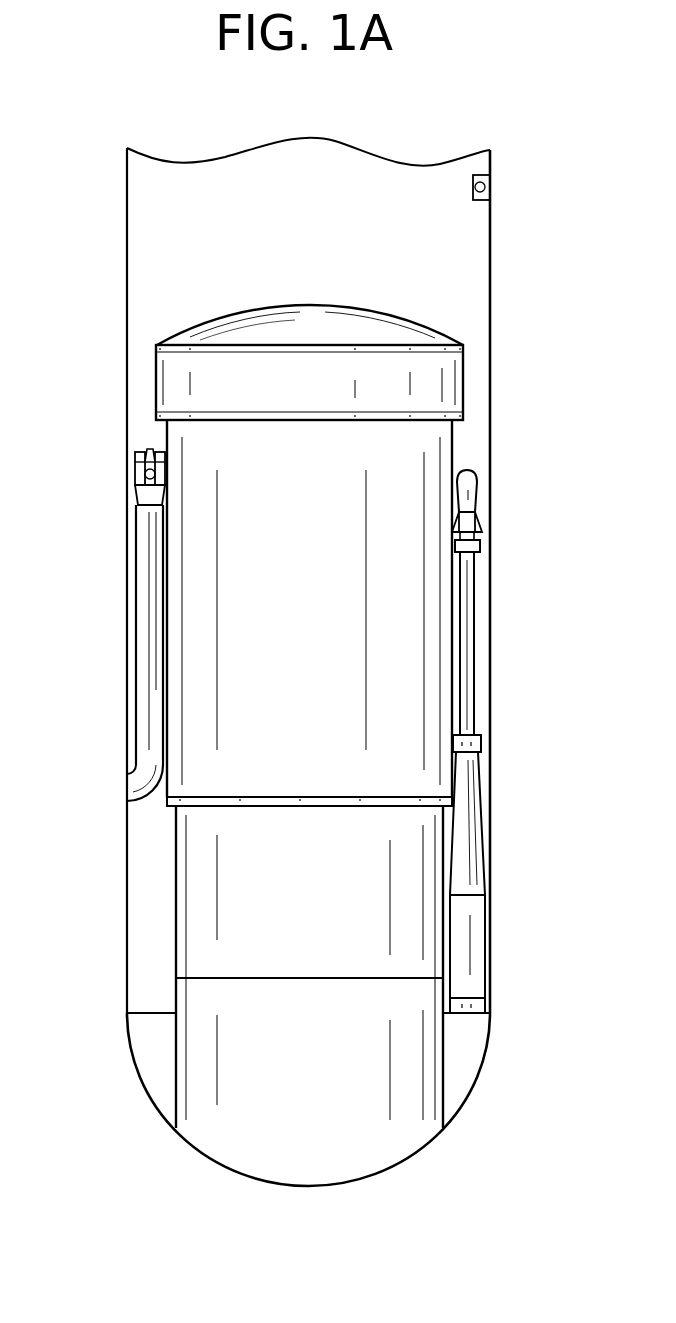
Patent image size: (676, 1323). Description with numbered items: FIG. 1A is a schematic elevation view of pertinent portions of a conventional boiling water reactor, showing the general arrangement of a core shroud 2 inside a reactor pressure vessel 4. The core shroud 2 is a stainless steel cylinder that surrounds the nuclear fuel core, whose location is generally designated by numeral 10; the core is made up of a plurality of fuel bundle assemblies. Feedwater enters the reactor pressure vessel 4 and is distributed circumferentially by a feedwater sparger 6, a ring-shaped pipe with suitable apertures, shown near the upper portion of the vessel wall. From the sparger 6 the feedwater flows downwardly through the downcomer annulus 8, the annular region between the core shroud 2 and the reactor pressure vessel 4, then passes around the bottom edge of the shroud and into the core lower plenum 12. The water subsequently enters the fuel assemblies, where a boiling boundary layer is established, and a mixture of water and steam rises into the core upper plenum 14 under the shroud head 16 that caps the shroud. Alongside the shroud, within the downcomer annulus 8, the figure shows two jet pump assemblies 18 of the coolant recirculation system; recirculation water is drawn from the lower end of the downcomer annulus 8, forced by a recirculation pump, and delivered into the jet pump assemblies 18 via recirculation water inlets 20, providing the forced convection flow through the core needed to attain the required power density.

The core shroud 2 is at (274, 691).
The reactor pressure vessel 4 is at (127, 971).
The feedwater sparger 6 is at (491, 186).
The downcomer annulus 8 is at (482, 628).
The nuclear fuel core 10 is at (326, 614).
The core lower plenum 12 is at (326, 916).
The core upper plenum 14 is at (308, 401).
The shroud head 16 is at (256, 310).
The jet pump assemblies 18 is at (137, 612).
The recirculation water inlets 20 is at (127, 774).